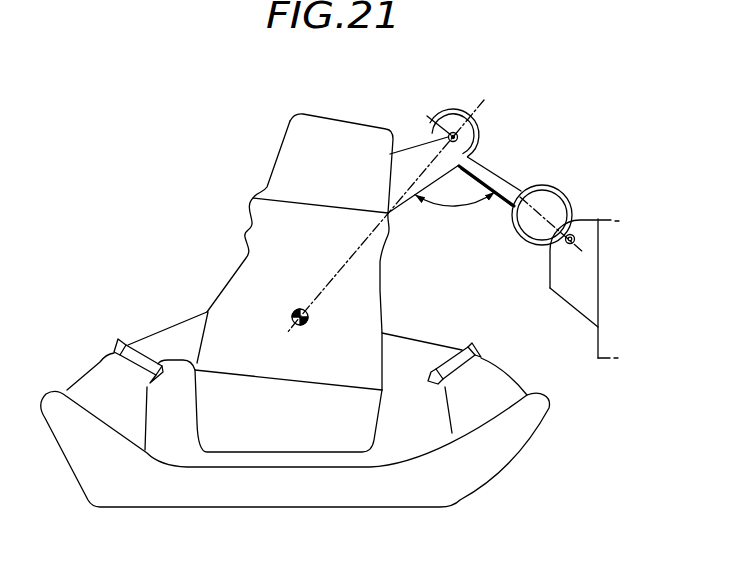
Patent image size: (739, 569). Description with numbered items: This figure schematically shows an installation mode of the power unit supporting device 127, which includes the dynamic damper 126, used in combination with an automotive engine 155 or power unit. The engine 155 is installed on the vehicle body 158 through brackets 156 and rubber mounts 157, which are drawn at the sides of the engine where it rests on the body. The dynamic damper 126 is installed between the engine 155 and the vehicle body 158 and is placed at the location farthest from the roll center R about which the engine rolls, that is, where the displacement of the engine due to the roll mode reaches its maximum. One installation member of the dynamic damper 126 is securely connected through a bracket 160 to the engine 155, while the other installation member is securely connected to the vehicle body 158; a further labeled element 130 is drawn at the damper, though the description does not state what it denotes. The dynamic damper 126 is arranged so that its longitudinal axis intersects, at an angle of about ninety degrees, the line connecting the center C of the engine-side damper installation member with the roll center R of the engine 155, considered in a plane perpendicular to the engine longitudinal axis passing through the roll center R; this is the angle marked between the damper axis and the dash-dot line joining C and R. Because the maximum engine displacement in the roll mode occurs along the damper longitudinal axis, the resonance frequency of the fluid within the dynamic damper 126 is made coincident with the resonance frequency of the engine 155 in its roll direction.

The automotive engine 155 is at (245, 206).
The bracket 156 is at (429, 337).
The rubber mount 157 is at (486, 345).
The vehicle body 158 is at (601, 247).
The bracket 160 is at (417, 140).
The dynamic damper 126 is at (523, 170).
The power unit supporting device 127 is at (556, 173).
The pivot axis (171) 130 is at (509, 203).
The center of the engine side dynamic damper installation member C is at (454, 133).
The roll center R is at (293, 311).